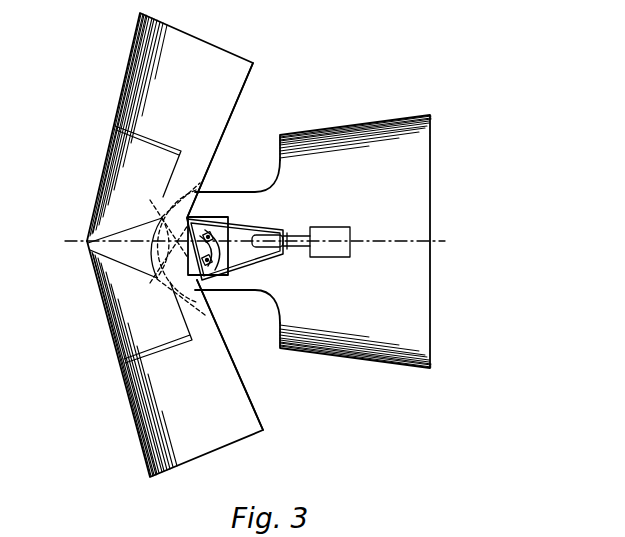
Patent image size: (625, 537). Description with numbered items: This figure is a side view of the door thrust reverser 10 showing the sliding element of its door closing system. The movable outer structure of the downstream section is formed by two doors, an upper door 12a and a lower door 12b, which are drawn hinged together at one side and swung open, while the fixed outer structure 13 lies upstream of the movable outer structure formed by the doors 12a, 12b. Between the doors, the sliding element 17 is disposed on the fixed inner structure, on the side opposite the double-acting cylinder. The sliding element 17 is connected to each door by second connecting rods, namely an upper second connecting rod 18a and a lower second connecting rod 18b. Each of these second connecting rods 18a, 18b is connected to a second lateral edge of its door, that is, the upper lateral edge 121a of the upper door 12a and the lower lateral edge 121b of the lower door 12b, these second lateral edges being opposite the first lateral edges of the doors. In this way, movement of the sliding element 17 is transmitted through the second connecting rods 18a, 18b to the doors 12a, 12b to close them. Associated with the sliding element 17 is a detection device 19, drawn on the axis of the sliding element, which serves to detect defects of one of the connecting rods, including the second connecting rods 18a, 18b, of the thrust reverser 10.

The thrust reverser 10 is at (368, 50).
The upper door 12a is at (127, 72).
The lower door 12b is at (127, 405).
The upper lateral edge 121a is at (247, 80).
The lower lateral edge 121b is at (258, 403).
The fixed outer structure 13 is at (404, 118).
The sliding element 17 is at (293, 233).
The upper second connecting rod 18a is at (260, 212).
The lower second connecting rod 18b is at (260, 272).
The detection device 19 is at (342, 250).